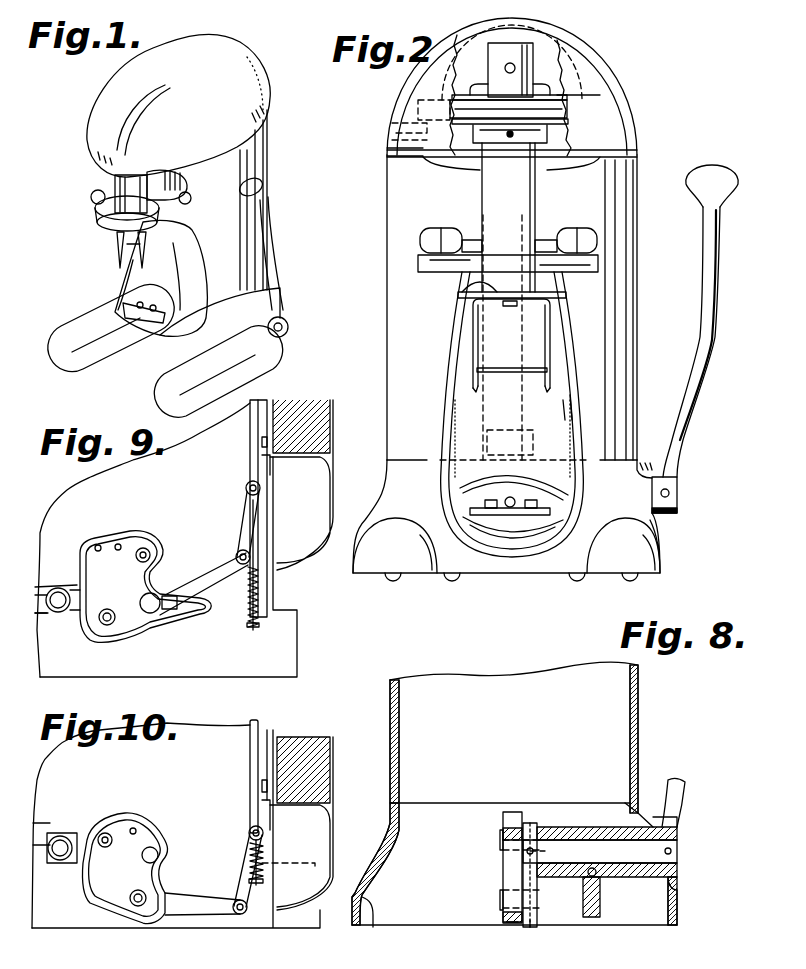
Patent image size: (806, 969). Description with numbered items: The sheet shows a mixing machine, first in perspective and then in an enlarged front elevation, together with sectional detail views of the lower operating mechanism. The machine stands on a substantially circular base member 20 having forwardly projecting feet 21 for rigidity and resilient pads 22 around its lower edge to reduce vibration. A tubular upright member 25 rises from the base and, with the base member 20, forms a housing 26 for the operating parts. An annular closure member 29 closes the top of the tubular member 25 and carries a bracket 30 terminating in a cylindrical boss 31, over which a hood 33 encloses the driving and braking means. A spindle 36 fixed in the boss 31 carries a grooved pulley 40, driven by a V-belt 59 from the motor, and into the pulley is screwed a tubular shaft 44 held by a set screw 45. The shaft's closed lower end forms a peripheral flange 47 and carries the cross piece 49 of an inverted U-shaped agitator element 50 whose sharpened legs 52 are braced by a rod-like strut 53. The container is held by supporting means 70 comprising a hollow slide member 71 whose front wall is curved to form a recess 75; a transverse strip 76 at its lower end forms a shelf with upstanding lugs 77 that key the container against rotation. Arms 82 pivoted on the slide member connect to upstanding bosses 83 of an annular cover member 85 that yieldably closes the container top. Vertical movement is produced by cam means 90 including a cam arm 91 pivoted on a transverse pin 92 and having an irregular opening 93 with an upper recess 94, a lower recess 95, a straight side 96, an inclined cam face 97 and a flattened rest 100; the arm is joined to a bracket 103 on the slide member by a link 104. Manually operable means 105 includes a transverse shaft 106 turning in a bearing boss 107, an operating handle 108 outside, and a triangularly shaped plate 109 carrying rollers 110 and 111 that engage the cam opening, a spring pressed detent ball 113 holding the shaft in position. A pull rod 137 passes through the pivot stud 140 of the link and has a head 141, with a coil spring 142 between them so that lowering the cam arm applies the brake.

In FIG. 1, the base member 20 is at (250, 364).
In FIG. 2, the base member 20 is at (398, 480).
In FIG. 8, the base member 20 is at (373, 912).
In FIG. 1, the feet 21 is at (170, 396).
In FIG. 2, the feet 21 is at (425, 585).
In FIG. 2, the resilient pads 22 is at (388, 580).
In FIG. 1, the tubular upright member 25 is at (262, 165).
In FIG. 2, the tubular upright member 25 is at (625, 358).
In FIG. 8, the tubular upright member 25 is at (637, 724).
In FIG. 1, the housing 26 is at (282, 209).
In FIG. 2, the housing 26 is at (379, 438).
In FIG. 8, the housing 26 is at (382, 704).
In FIG. 2, the annular closure member 29 is at (568, 133).
In FIG. 2, the arm or bracket 30 is at (552, 85).
In FIG. 2, the cylindrical boss 31 is at (530, 65).
In FIG. 1, the cap or hood member 33 is at (265, 108).
In FIG. 2, the cap or hood member 33 is at (388, 100).
In FIG. 2, the spindle 36 is at (465, 45).
In FIG. 2, the grooved pulley 40 is at (605, 90).
In FIG. 1, the tubular shaft 44 is at (118, 183).
In FIG. 2, the tubular shaft 44 is at (537, 200).
In FIG. 2, the set screw 45 is at (510, 137).
In FIG. 1, the peripheral flange 47 is at (117, 240).
In FIG. 2, the peripheral flange 47 is at (560, 300).
In FIG. 2, the cross piece 49 is at (462, 288).
In FIG. 1, the agitator element 50 is at (106, 264).
In FIG. 2, the agitator element 50 is at (573, 338).
In FIG. 2, the legs 52 is at (545, 325).
In FIG. 2, the rod-like strut 53 is at (512, 372).
In FIG. 2, the V-belt 59 is at (567, 107).
In FIG. 2, the supporting means 70 is at (434, 389).
In FIG. 1, the slide member 71 is at (207, 282).
In FIG. 9, the slide member 71 is at (318, 420).
In FIG. 10, the slide member 71 is at (318, 765).
In FIG. 2, the recess 75 is at (568, 418).
In FIG. 1, the transverse strip 76 is at (68, 352).
In FIG. 2, the transverse strip 76 is at (520, 515).
In FIG. 1, the upstanding lugs 77 is at (140, 325).
In FIG. 2, the upstanding lugs 77 is at (533, 500).
In FIG. 1, the arms 82 is at (91, 196).
In FIG. 2, the arms 82 is at (430, 235).
In FIG. 2, the upstanding bosses 83 is at (468, 240).
In FIG. 1, the annular cover member 85 is at (96, 210).
In FIG. 2, the annular cover member 85 is at (590, 265).
In FIG. 9, the cam means 90 is at (167, 526).
In FIG. 10, the cam means 90 is at (180, 814).
In FIG. 8, the cam means 90 is at (492, 866).
In FIG. 9, the cam arm 91 is at (135, 635).
In FIG. 8, the cam arm 91 is at (500, 876).
In FIG. 9, the transverse pin 92 is at (52, 608).
In FIG. 10, the transverse pin 92 is at (60, 838).
In FIG. 9, the opening 93 is at (96, 544).
In FIG. 10, the opening 93 is at (135, 826).
In FIG. 8, the opening 93 is at (507, 924).
In FIG. 9, the upper recess 94 is at (165, 548).
In FIG. 10, the upper recess 94 is at (162, 852).
In FIG. 9, the lower recess 95 is at (180, 612).
In FIG. 10, the lower recess 95 is at (157, 905).
In FIG. 9, the straight side 96 is at (92, 585).
In FIG. 10, the straight side 96 is at (85, 892).
In FIG. 9, the inclined cam face 97 is at (115, 540).
In FIG. 10, the inclined cam face 97 is at (162, 840).
In FIG. 9, the rest or dwell 100 is at (152, 614).
In FIG. 9, the bracket 103 is at (263, 475).
In FIG. 10, the bracket 103 is at (268, 825).
In FIG. 9, the link 104 is at (243, 525).
In FIG. 10, the link 104 is at (247, 873).
In FIG. 8, the manually operable means 105 is at (697, 824).
In FIG. 9, the transverse shaft 106 is at (170, 597).
In FIG. 10, the transverse shaft 106 is at (144, 858).
In FIG. 8, the transverse shaft 106 is at (585, 840).
In FIG. 8, the bearing boss 107 is at (555, 827).
In FIG. 1, the operating handle 108 is at (285, 290).
In FIG. 2, the operating handle 108 is at (672, 445).
In FIG. 8, the operating handle 108 is at (688, 790).
In FIG. 10, the triangularly shaped plate 109 is at (115, 882).
In FIG. 8, the triangularly shaped plate 109 is at (530, 928).
In FIG. 9, the roller 110 is at (144, 548).
In FIG. 10, the roller 110 is at (106, 832).
In FIG. 9, the roller 111 is at (100, 625).
In FIG. 10, the roller 111 is at (133, 905).
In FIG. 8, the spring pressed detent ball 113 is at (583, 880).
In FIG. 9, the pull rod 137 is at (250, 444).
In FIG. 10, the pull rod 137 is at (250, 746).
In FIG. 9, the pivot stud 140 is at (260, 490).
In FIG. 10, the pivot stud 140 is at (249, 826).
In FIG. 9, the head 141 is at (275, 632).
In FIG. 10, the head 141 is at (278, 870).
In FIG. 9, the coil spring 142 is at (262, 595).
In FIG. 10, the coil spring 142 is at (249, 878).